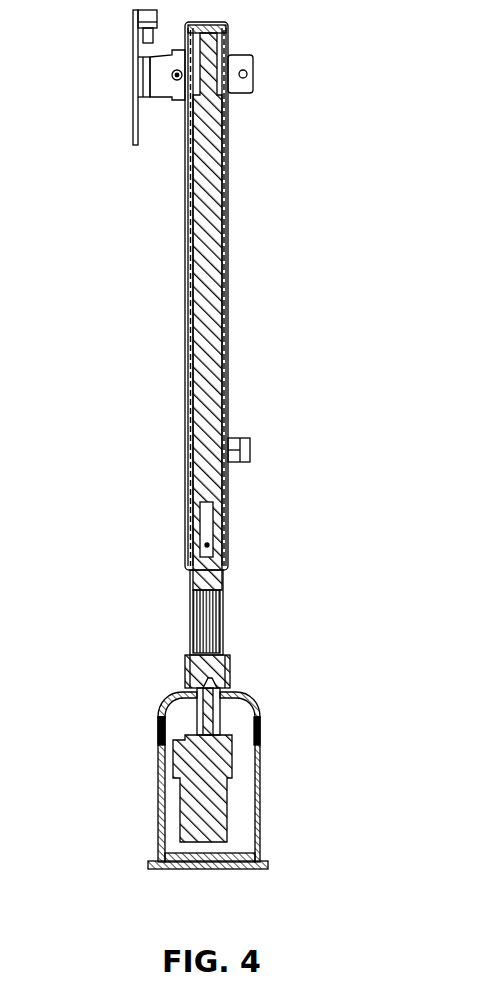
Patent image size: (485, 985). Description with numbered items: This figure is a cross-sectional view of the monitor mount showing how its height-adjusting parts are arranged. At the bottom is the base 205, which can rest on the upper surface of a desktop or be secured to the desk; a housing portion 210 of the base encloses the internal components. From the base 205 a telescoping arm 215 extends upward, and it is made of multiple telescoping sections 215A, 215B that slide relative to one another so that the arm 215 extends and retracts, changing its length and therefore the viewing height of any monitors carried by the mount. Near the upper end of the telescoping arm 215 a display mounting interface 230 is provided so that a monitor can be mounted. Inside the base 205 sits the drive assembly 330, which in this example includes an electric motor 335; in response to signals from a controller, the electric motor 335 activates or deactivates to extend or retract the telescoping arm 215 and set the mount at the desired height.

The base 205 is at (213, 780).
The base housing 210 is at (158, 822).
The telescoping arm 215 is at (183, 304).
The telescoping section 215A is at (228, 328).
The telescoping section 215B is at (225, 583).
The display mounting interface 230 is at (133, 68).
The drive assembly 330 is at (242, 759).
The electric motor 335 is at (207, 805).